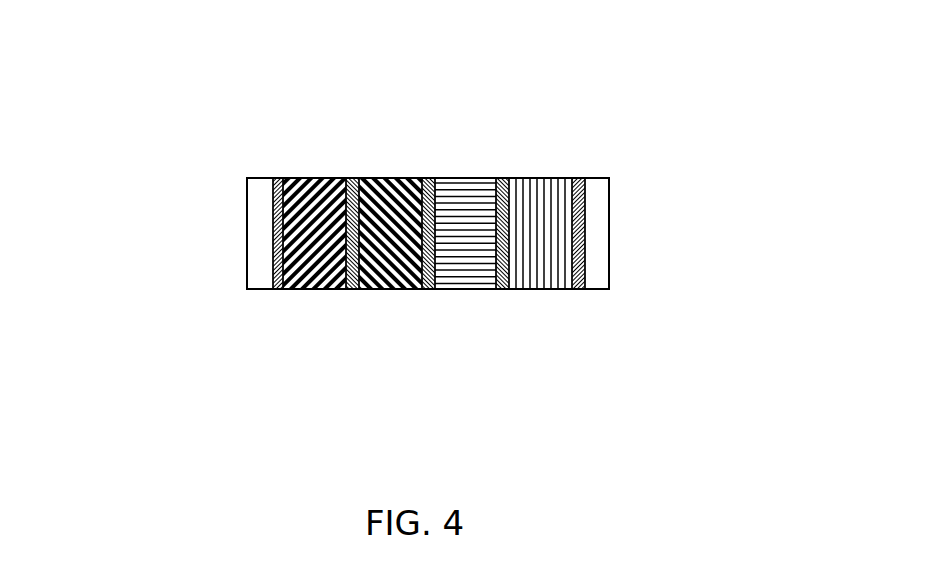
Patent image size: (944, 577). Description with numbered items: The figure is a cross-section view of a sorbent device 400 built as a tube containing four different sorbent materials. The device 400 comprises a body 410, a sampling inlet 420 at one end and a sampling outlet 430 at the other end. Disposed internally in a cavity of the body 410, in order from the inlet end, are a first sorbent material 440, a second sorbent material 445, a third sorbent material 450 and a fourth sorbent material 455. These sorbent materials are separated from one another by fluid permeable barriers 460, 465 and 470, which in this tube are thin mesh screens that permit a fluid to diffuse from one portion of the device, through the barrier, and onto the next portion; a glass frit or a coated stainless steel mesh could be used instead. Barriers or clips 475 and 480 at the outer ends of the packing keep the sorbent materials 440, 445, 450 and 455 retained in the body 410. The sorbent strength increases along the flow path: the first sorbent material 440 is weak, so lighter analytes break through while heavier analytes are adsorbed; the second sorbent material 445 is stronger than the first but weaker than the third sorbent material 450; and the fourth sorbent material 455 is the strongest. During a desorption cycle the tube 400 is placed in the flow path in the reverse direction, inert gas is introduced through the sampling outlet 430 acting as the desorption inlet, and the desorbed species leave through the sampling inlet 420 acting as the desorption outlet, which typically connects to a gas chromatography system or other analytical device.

The sorbent device 400 is at (228, 361).
The body 410 is at (260, 178).
The sampling inlet 420 is at (247, 228).
The sampling outlet 430 is at (609, 240).
The first sorbent material 440 is at (308, 282).
The second sorbent material 445 is at (385, 290).
The third sorbent material 450 is at (462, 283).
The fourth sorbent material 455 is at (547, 283).
The fluid permeable barrier 460 is at (355, 178).
The fluid permeable barrier 465 is at (427, 178).
The fluid permeable barrier 470 is at (503, 178).
The barrier or clip 475 is at (280, 178).
The barrier or clip 480 is at (580, 178).